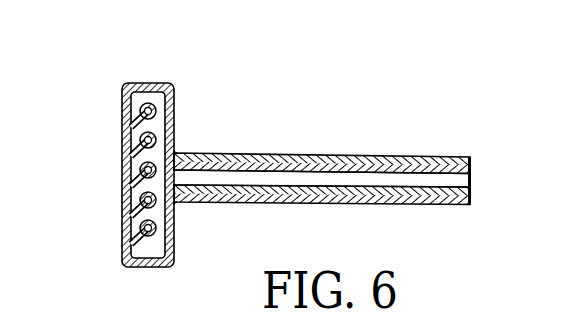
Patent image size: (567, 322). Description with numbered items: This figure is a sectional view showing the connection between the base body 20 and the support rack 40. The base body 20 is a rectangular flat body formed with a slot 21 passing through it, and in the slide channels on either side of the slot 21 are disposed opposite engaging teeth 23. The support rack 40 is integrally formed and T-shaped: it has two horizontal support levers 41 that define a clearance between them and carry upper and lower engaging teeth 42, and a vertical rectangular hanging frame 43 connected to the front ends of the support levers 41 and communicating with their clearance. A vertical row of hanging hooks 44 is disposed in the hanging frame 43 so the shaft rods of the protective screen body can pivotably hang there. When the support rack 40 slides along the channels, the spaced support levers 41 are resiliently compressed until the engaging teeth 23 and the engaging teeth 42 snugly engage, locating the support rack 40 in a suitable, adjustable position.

The base body 20 is at (353, 138).
The slot 21 is at (463, 180).
The engaging teeth 23 is at (450, 179).
The support rack 40 is at (140, 139).
The support levers 41 is at (357, 195).
The engaging teeth 42 is at (421, 158).
The hanging frame 43 is at (153, 83).
The hanging hooks 44 is at (137, 135).